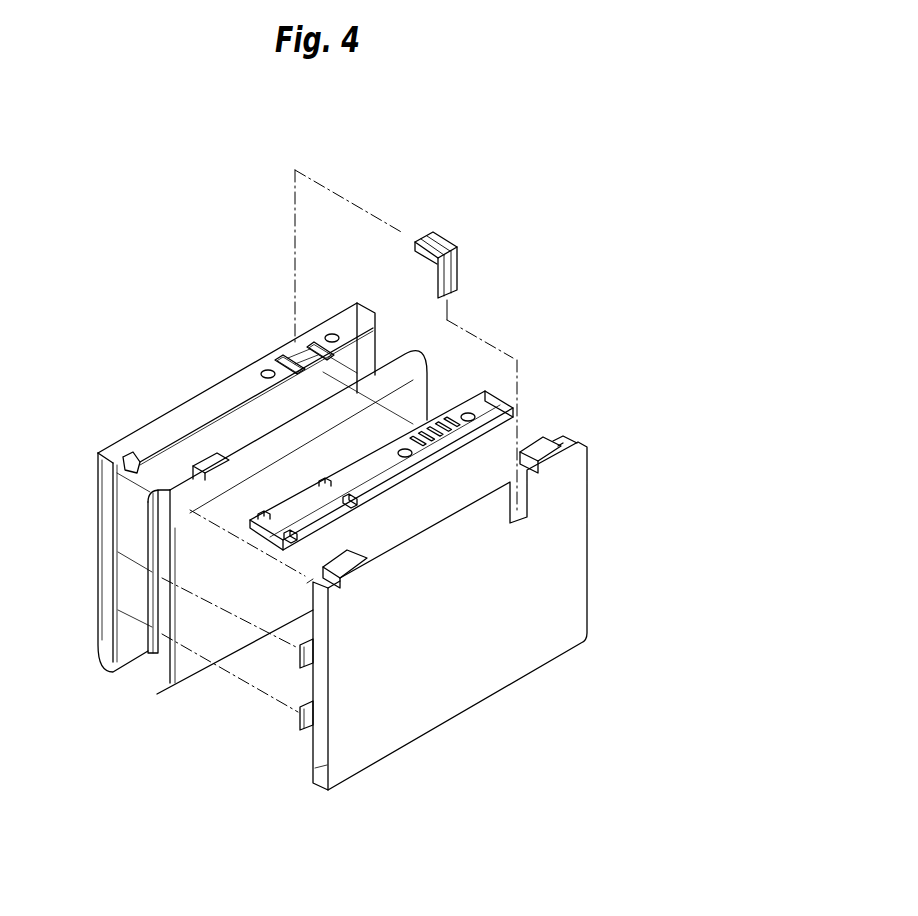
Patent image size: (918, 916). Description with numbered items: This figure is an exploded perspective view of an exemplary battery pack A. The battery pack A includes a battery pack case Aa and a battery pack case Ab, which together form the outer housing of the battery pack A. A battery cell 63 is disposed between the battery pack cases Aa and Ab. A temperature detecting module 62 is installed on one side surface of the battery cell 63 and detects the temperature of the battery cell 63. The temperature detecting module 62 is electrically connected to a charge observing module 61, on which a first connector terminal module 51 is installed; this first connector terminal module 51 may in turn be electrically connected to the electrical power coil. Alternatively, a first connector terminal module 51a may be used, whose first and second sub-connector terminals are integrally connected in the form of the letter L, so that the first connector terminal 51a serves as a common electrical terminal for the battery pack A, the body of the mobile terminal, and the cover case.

The battery pack A is at (440, 798).
The battery pack case Aa is at (464, 687).
The battery pack case Ab is at (107, 575).
The first connector terminal module 51 is at (458, 405).
The first connector terminal module 51a is at (443, 243).
The charge observing module 61 is at (505, 395).
The temperature detecting module 62 is at (163, 651).
The battery cell 63 is at (192, 667).